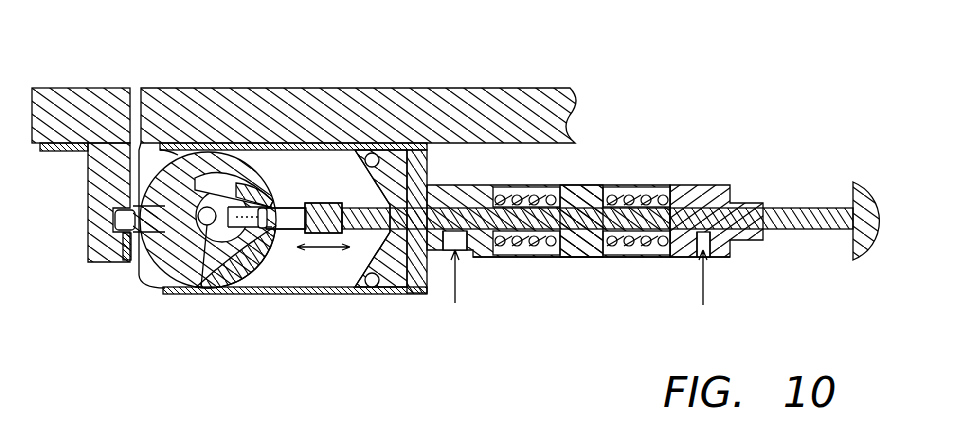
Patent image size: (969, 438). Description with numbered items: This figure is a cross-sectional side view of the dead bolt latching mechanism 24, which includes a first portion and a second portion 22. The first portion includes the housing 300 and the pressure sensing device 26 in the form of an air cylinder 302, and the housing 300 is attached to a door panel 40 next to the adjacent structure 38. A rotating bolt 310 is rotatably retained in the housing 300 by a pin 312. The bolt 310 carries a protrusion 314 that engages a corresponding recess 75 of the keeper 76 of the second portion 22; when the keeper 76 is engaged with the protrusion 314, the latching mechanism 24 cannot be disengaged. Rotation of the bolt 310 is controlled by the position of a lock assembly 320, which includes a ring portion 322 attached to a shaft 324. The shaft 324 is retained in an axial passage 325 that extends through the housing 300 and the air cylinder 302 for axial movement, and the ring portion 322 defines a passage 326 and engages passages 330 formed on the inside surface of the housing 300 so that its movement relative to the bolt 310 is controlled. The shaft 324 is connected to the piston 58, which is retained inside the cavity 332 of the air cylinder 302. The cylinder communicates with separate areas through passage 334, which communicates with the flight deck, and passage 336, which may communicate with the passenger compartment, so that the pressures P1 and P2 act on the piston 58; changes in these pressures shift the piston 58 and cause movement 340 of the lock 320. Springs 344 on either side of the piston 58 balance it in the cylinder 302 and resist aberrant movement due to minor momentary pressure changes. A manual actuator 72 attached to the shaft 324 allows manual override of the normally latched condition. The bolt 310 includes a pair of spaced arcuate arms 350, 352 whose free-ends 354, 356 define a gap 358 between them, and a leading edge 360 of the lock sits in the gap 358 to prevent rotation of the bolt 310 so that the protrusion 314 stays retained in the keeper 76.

The second portion 22 is at (78, 265).
The dead bolt latching mechanism 24 is at (540, 338).
The pressure sensing device 26 is at (642, 173).
The first housing block 38 is at (95, 88).
The door panel 40 is at (258, 98).
The piston 58 is at (580, 192).
The manual actuator 72 is at (866, 188).
The recess 75 is at (116, 210).
The keeper 76 is at (97, 178).
The housing 300 is at (312, 293).
The air cylinder 302 is at (557, 259).
The rotating bolt 310 is at (150, 273).
The pin 312 is at (207, 225).
The protrusion 314 is at (120, 262).
The lock assembly 320 is at (377, 240).
The ring portion 322 is at (304, 200).
The shaft 324 is at (360, 207).
The axial passage 325 is at (407, 207).
The passage 326 is at (277, 200).
The passages 330 is at (293, 208).
The cavity 332 is at (622, 257).
The passage 334 is at (443, 258).
The passage 336 is at (711, 243).
The movement 340 is at (326, 250).
The springs 344 is at (513, 200).
The arcuate arm 350 is at (200, 157).
The arcuate arm 352 is at (240, 229).
The free-end 354 is at (227, 192).
The free-end 356 is at (250, 262).
The gap 358 is at (232, 263).
The leading edge 360 is at (303, 229).
The air pressure P1 is at (472, 278).
The air pressure P2 is at (719, 280).